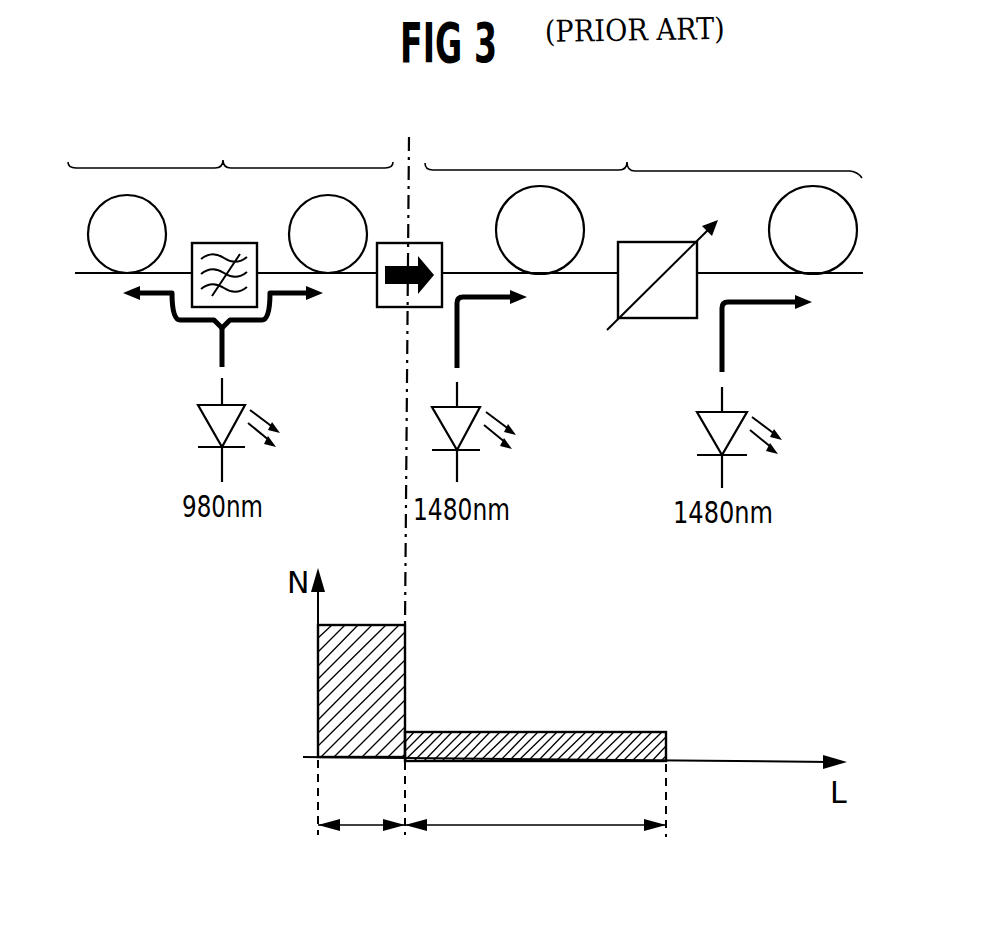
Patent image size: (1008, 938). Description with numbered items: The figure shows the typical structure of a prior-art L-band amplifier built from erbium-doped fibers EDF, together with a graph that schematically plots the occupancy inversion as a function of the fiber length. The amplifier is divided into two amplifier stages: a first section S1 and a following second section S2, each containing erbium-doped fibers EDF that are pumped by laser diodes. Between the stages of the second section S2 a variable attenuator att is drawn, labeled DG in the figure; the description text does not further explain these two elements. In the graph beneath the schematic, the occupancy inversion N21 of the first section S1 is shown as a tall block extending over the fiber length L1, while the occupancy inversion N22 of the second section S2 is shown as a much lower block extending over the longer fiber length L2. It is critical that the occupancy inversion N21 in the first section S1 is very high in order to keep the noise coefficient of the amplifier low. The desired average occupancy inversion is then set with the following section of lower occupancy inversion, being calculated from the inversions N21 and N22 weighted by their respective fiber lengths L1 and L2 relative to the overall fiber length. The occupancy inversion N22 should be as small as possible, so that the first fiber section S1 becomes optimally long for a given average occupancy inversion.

The first section S1 is at (230, 138).
The second section S2 is at (643, 143).
The erbium-doped fiber EDF is at (472, 230).
The variable attenuator att is at (662, 275).
The gain-flattening / attenuator element DG is at (663, 320).
The occupancy inversion of the first section N21 is at (370, 643).
The occupancy inversion of the second section N22 is at (555, 738).
The fiber length of the first amplifier stage L1 is at (361, 805).
The fiber length of the second amplifier stage L2 is at (535, 805).